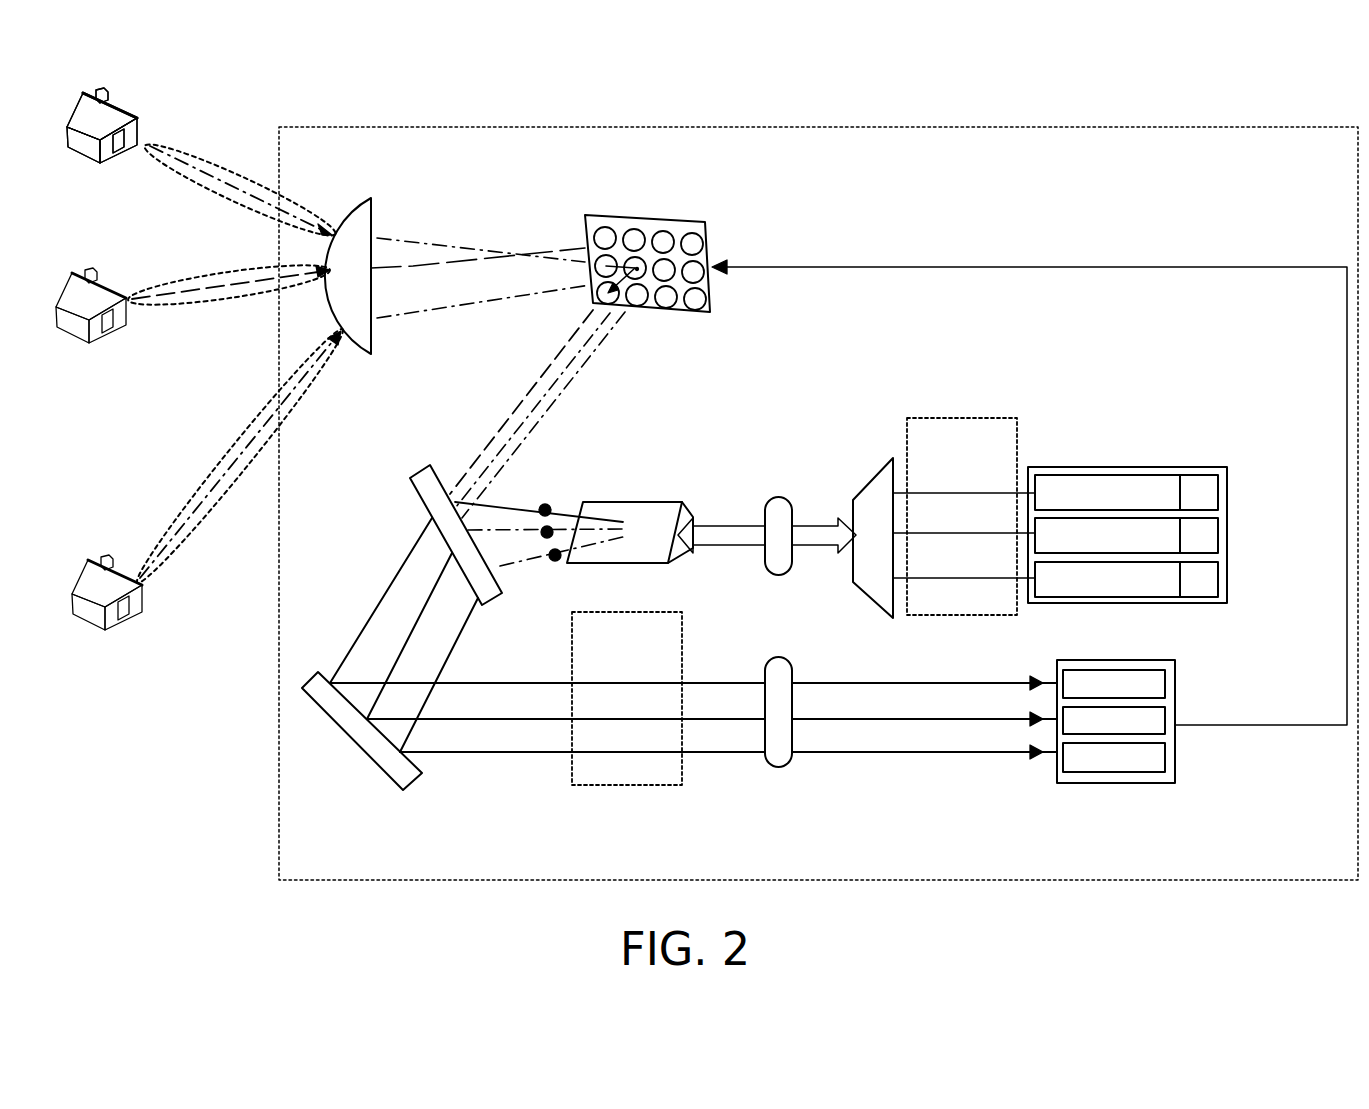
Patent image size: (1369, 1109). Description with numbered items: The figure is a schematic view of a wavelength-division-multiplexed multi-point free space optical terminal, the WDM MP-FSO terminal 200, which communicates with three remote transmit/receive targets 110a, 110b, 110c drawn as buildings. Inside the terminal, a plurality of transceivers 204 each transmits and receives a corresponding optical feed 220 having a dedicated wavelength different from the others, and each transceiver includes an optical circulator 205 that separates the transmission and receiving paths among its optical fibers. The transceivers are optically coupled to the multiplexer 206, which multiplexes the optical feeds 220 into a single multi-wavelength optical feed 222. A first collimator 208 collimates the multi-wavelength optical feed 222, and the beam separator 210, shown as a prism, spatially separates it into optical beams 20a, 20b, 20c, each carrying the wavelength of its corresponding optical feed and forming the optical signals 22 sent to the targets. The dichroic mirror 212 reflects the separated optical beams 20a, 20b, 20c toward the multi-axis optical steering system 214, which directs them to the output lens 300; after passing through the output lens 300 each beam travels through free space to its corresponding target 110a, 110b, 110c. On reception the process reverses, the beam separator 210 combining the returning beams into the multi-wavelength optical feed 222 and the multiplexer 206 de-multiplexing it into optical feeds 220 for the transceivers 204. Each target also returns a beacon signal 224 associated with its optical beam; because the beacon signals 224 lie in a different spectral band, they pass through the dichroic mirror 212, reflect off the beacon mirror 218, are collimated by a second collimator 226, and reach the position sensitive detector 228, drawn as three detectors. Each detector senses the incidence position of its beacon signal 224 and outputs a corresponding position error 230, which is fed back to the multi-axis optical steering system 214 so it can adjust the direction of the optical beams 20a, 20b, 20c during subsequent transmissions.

The optical beam 20a is at (236, 180).
The optical beam 20b is at (207, 280).
The optical beam 20c is at (208, 492).
The optical signals 22 is at (560, 550).
The transmit/receive target 110a is at (100, 163).
The transmit/receive target 110b is at (89, 343).
The transmit/receive target 110c is at (142, 605).
The WDM MP-FSO terminal 200 is at (818, 503).
The transceivers 204 is at (1182, 490).
The optical circulator 205 is at (1220, 490).
The multiplexer 206 is at (873, 476).
The first collimator 208 is at (778, 576).
The beam separator 210 is at (640, 500).
The dichroic mirror 212 is at (406, 474).
The multi-axis optical steering system 214 is at (650, 216).
The beacon mirror 218 is at (420, 775).
The optical feeds 220 is at (960, 417).
The multi-wavelength optical feed 222 is at (730, 524).
The beacon signals 224 is at (627, 786).
The second collimator 226 is at (778, 768).
The position sensitive detector 228 is at (1118, 784).
The position error 230 is at (1031, 266).
The output lens 300 is at (368, 196).